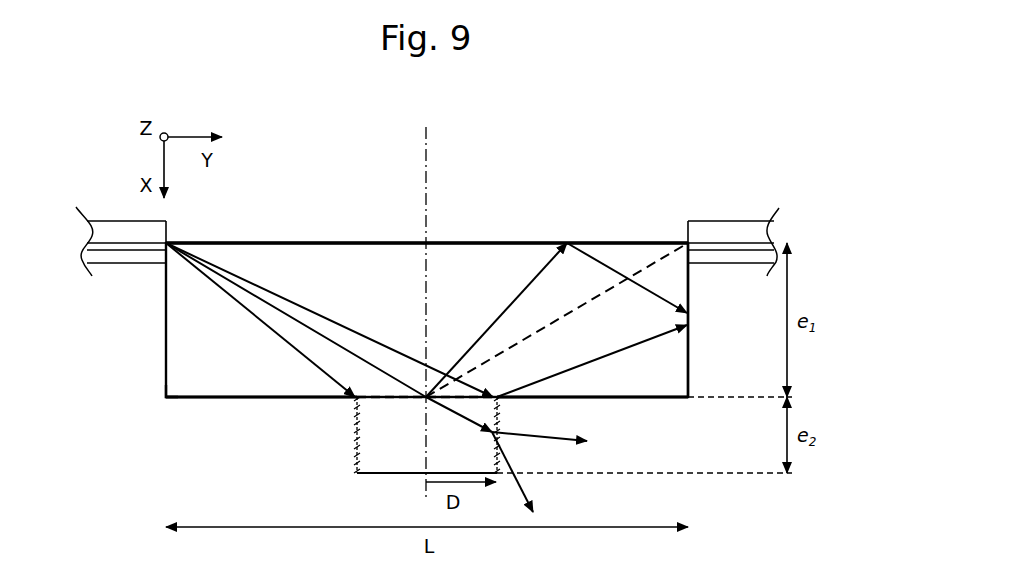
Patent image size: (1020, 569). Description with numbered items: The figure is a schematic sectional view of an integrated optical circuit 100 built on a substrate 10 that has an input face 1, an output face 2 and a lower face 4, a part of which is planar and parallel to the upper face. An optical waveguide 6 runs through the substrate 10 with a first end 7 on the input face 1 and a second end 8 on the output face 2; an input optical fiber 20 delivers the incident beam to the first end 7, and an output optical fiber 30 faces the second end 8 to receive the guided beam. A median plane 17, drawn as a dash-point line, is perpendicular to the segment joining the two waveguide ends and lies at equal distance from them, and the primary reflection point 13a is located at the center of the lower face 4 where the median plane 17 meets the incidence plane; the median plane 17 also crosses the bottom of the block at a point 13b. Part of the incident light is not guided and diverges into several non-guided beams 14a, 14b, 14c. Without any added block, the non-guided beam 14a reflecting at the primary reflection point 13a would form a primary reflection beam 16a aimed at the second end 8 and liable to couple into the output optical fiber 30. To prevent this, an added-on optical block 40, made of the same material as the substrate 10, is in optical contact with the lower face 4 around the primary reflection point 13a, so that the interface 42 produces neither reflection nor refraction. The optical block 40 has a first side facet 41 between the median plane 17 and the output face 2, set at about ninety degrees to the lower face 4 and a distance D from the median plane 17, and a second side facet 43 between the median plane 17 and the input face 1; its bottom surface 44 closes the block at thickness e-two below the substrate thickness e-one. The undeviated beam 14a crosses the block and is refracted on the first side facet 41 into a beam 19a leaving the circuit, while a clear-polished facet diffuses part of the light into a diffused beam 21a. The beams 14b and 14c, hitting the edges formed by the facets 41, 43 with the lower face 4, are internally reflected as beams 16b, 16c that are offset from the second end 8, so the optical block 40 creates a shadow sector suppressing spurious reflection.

The input face 1 is at (164, 371).
The output face 2 is at (690, 388).
The lower face 4 is at (194, 399).
The optical waveguide 6 is at (204, 241).
The first end 7 is at (162, 246).
The second end 8 is at (692, 222).
The substrate 10 is at (166, 398).
The primary reflection point 13a is at (434, 388).
The point on cavity bottom 13b is at (426, 475).
The non-guided optical beam 14a is at (248, 397).
The non-guided beam 14b is at (248, 397).
The non-guided beam 14c is at (366, 334).
The primary reflection beam 16a is at (664, 256).
The reflected non-guided beam 16b is at (497, 318).
The reflected non-guided beam 16c is at (633, 334).
The median plane 17 is at (423, 168).
The refracted beam 19a is at (574, 440).
The input optical fiber 20 is at (150, 218).
The diffused beam 21a is at (530, 498).
The output optical fiber 30 is at (750, 222).
The optical block 40 is at (413, 458).
The first side facet 41 is at (497, 414).
The interface 42 is at (356, 404).
The second side facet 43 is at (356, 436).
The cavity bottom wall 44 is at (358, 475).
The integrated optical circuit 100 is at (556, 191).